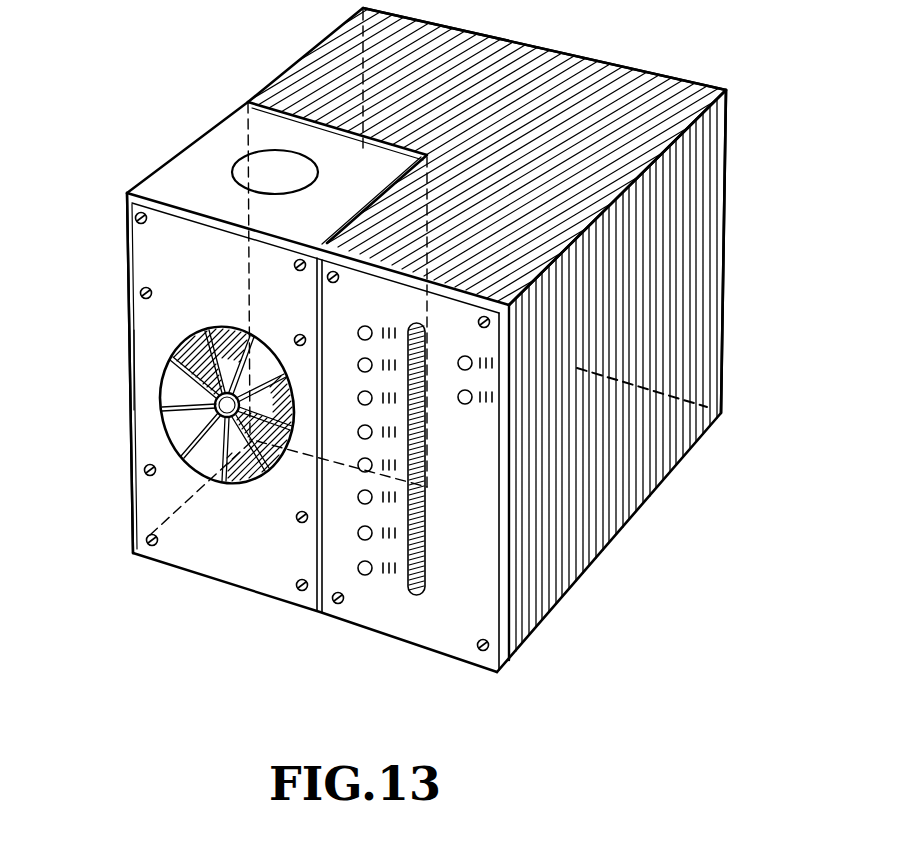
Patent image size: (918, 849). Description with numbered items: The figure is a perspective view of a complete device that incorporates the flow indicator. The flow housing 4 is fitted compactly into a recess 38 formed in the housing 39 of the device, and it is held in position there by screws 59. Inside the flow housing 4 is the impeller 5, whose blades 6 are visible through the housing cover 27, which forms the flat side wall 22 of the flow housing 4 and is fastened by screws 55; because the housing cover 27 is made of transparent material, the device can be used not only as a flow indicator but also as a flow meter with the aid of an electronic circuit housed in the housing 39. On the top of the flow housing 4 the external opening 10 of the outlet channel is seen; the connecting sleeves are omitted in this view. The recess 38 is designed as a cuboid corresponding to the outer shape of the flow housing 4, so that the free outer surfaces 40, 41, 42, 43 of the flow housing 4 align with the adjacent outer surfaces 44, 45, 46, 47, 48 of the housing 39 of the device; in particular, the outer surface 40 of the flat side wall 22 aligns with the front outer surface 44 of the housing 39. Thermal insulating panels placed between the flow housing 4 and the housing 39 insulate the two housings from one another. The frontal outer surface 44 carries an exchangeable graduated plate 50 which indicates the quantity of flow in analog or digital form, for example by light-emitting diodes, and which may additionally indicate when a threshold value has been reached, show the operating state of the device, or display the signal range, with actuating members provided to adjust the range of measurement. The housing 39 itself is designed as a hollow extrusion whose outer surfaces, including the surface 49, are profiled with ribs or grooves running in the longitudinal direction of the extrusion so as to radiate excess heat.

The flow housing 4 is at (123, 478).
The impeller 5 is at (183, 410).
The blade 6 is at (200, 442).
The external opening 10 is at (243, 158).
The flat side wall 22 is at (128, 192).
The housing cover 27 is at (147, 258).
The recess 38 is at (404, 160).
The housing of the device 39 is at (730, 170).
The outer surface 40 is at (150, 330).
The outer surface 41 is at (178, 177).
The outer surface 42 is at (228, 129).
The outer surface 43 is at (238, 546).
The front outer surface 44 is at (482, 607).
The outer surface 45 is at (298, 86).
The outer surface 46 is at (562, 63).
The outer surface 47 is at (585, 528).
The outer surface 48 is at (727, 278).
The outer surface 49 is at (650, 78).
The graduated plate 50 is at (507, 567).
The screw 55 is at (143, 294).
The screw 59 is at (138, 218).